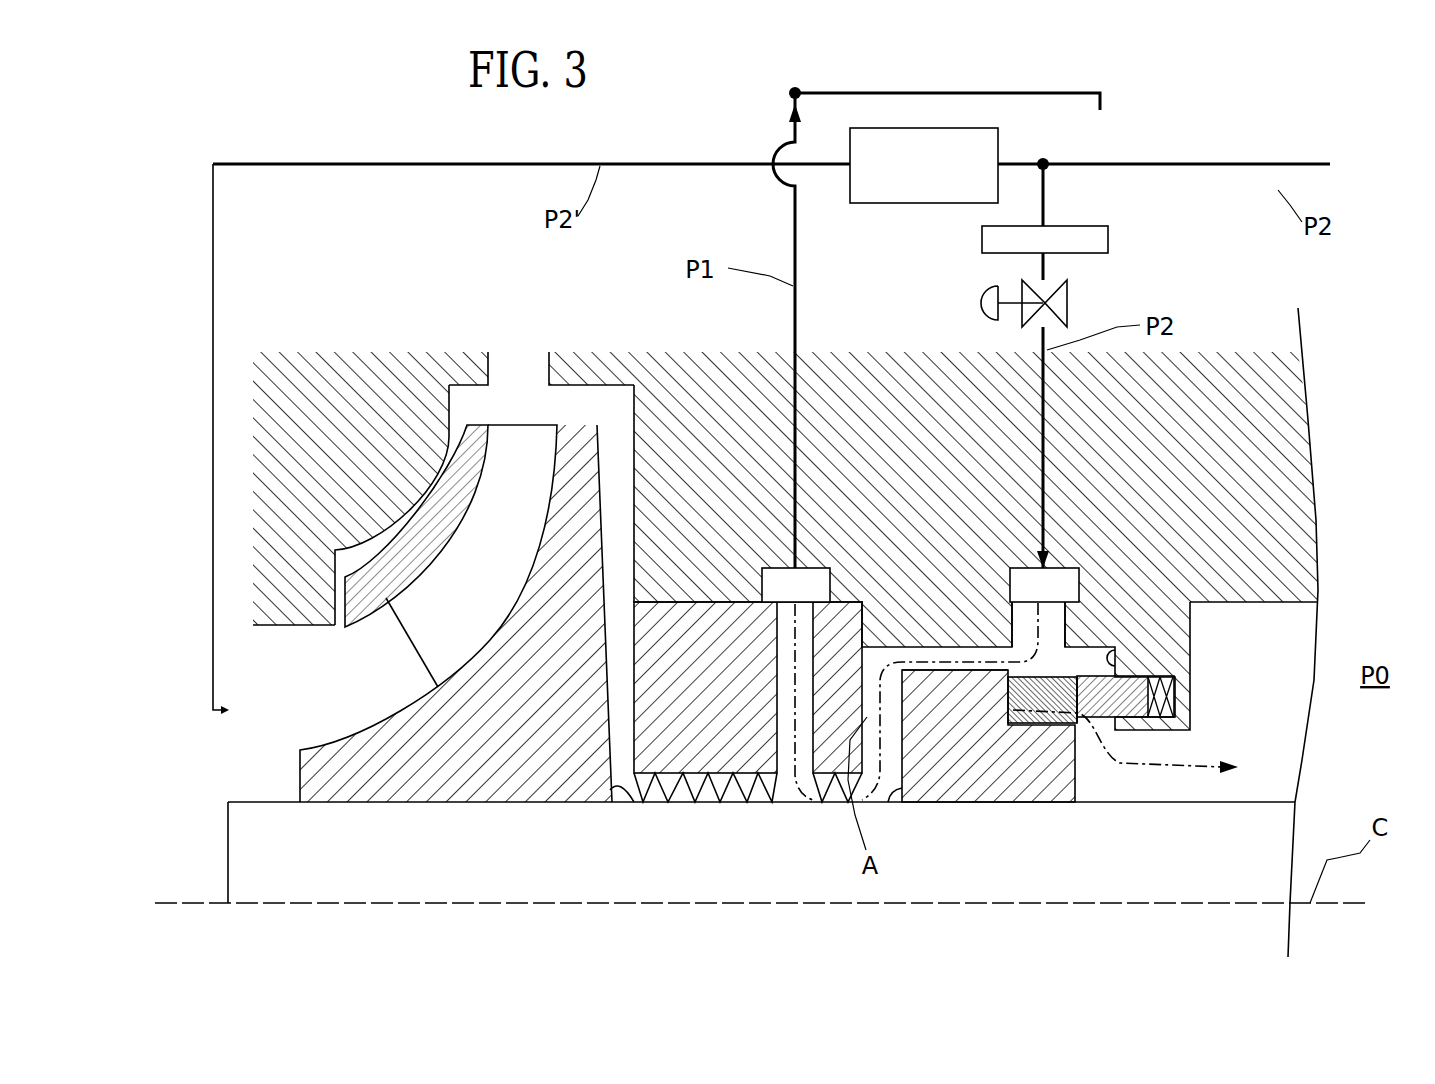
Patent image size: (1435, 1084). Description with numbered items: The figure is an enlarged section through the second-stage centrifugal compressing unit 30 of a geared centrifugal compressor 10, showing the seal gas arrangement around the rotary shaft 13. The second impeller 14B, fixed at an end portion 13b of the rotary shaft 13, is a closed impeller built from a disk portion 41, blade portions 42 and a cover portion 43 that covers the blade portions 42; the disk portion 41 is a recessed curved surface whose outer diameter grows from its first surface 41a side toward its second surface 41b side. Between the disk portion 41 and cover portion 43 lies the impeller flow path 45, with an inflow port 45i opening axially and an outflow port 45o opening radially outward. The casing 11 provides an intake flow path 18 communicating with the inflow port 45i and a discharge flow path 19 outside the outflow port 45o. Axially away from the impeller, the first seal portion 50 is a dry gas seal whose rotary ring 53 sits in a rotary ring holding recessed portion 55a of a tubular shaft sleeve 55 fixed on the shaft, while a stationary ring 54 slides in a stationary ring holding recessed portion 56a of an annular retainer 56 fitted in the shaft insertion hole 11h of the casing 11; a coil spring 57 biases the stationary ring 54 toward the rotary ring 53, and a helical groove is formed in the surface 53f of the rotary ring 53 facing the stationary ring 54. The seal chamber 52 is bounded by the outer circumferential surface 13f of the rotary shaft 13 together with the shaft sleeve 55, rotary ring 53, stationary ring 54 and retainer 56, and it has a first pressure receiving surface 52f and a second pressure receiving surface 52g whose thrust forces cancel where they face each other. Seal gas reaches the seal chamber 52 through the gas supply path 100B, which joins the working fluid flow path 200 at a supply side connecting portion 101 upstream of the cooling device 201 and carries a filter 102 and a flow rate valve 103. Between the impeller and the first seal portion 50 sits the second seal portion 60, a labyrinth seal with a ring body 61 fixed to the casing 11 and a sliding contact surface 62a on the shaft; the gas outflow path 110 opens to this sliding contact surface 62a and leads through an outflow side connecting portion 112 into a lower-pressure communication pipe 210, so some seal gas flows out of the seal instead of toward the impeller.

The geared centrifugal compressor 10 is at (364, 152).
The working fluid flow path 200 is at (1275, 208).
The communication pipe 210 is at (987, 92).
The gas outflow path 110 is at (790, 238).
The outflow side connecting portion 112 is at (789, 92).
The cooling device 201 is at (907, 128).
The supply side connecting portion 101 is at (1042, 158).
The gas supply path 100B is at (1050, 197).
The filter 102 is at (1108, 226).
The flow rate valve 103 is at (1067, 300).
The casing 11 is at (1215, 368).
The discharge flow path 19 is at (548, 383).
The shaft insertion hole 11h is at (1270, 603).
The centrifugal compressing unit 30 is at (392, 338).
The outflow port 45o is at (513, 425).
The impeller flow path 45 is at (467, 547).
The inflow port 45i is at (379, 661).
The intake flow path 18 is at (273, 620).
The second impeller 14B is at (378, 689).
The disk portion 41 is at (340, 737).
The cover portion 43 is at (412, 594).
The blade portions 42 is at (440, 687).
The first surface 41a is at (300, 790).
The second surface 41b is at (633, 803).
The rotary shaft 13 is at (777, 806).
The end portion 13b is at (228, 865).
The outer circumferential surface 13f is at (1260, 802).
The second seal portion 60 is at (734, 634).
The ring body 61 is at (693, 803).
The sliding contact surface 62a is at (737, 803).
The seal chamber 52 is at (842, 803).
The second pressure receiving surface 52g is at (865, 667).
The first pressure receiving surface 52f is at (893, 727).
The first seal portion 50 is at (1102, 550).
The shaft sleeve 55 is at (981, 810).
The rotary ring holding recessed portion 55a is at (1033, 727).
The rotary ring 53 is at (1056, 723).
The surface 53f is at (1178, 690).
The retainer 56 is at (1148, 814).
The stationary ring holding recessed portion 56a is at (1125, 717).
The stationary ring 54 is at (1090, 720).
The coil spring 57 is at (1162, 720).